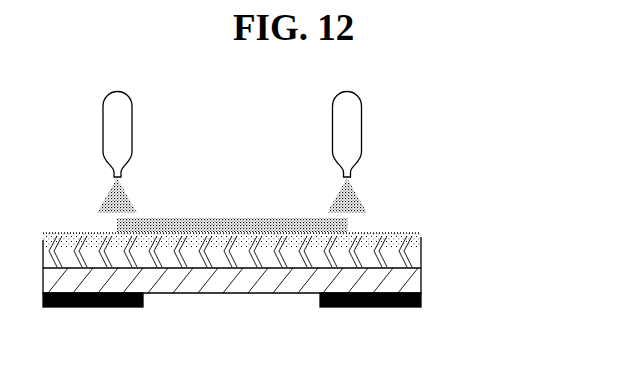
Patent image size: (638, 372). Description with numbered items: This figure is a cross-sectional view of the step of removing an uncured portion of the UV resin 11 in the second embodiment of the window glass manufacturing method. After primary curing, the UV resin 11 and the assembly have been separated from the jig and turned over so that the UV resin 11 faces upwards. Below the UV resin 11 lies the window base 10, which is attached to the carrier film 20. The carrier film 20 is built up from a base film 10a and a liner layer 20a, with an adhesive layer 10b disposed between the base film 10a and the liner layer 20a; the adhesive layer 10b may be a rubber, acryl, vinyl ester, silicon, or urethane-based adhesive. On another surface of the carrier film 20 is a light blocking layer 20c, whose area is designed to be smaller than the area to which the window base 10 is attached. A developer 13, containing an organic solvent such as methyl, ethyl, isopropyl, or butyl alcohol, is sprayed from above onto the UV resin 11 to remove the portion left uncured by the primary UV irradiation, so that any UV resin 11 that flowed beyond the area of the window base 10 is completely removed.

The window base 10 is at (274, 285).
The base film 10a is at (412, 280).
The adhesive layer 10b is at (412, 250).
The UV resin 11 is at (350, 223).
The developer 13 is at (356, 191).
The carrier film 20 is at (510, 222).
The liner layer 20a is at (424, 237).
The light blocking layer 20c is at (418, 300).